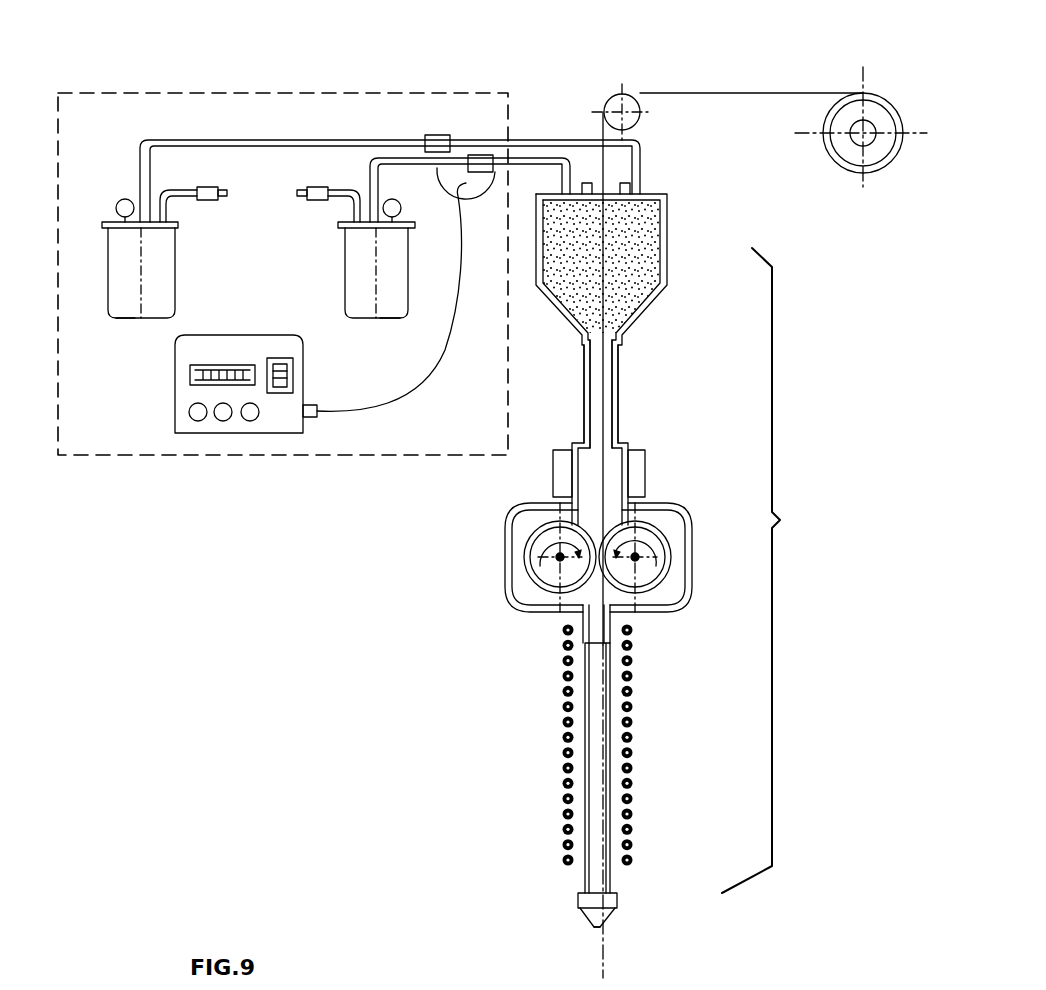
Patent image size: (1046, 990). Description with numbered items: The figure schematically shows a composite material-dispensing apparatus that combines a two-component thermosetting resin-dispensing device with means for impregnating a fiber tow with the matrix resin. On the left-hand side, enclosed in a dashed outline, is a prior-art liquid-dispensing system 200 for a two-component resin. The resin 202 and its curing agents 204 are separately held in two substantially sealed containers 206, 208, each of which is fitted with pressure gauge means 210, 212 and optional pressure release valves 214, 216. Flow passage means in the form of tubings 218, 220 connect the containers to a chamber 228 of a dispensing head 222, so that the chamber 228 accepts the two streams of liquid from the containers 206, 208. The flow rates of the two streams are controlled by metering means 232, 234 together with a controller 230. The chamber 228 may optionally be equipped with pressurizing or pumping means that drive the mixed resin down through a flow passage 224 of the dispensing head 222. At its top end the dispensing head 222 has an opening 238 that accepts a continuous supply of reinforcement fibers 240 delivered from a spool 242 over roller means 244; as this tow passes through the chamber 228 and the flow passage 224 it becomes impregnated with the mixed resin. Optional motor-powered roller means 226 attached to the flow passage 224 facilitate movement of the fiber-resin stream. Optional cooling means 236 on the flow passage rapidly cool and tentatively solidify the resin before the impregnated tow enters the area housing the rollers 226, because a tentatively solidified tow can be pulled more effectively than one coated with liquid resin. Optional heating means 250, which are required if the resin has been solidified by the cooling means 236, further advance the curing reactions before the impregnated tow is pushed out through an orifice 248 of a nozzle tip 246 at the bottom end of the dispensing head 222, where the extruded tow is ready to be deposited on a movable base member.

The liquid-dispensing system 200 is at (237, 472).
The resin 202 is at (174, 280).
The curing agents 204 is at (344, 275).
The container 206 is at (115, 320).
The container 208 is at (385, 321).
The pressure gauge means 210 is at (115, 206).
The pressure gauge means 212 is at (407, 196).
The pressure release valve 214 is at (199, 201).
The pressure release valve 216 is at (318, 201).
The flow passage means 218 is at (207, 143).
The flow passage means 220 is at (404, 158).
The dispensing head 222 is at (784, 570).
The flow passage 224 is at (604, 378).
The roller means 226 is at (542, 568).
The chamber 228 is at (648, 295).
The controller 230 is at (175, 405).
The metering means 232 is at (432, 135).
The metering means 234 is at (480, 155).
The cooling means 236 is at (638, 470).
The opening 238 is at (603, 183).
The reinforcement fibers 240 is at (678, 93).
The spool 242 is at (855, 152).
The roller means 244 is at (612, 100).
The nozzle tip 246 is at (578, 900).
The orifice 248 is at (592, 930).
The heating means 250 is at (560, 746).